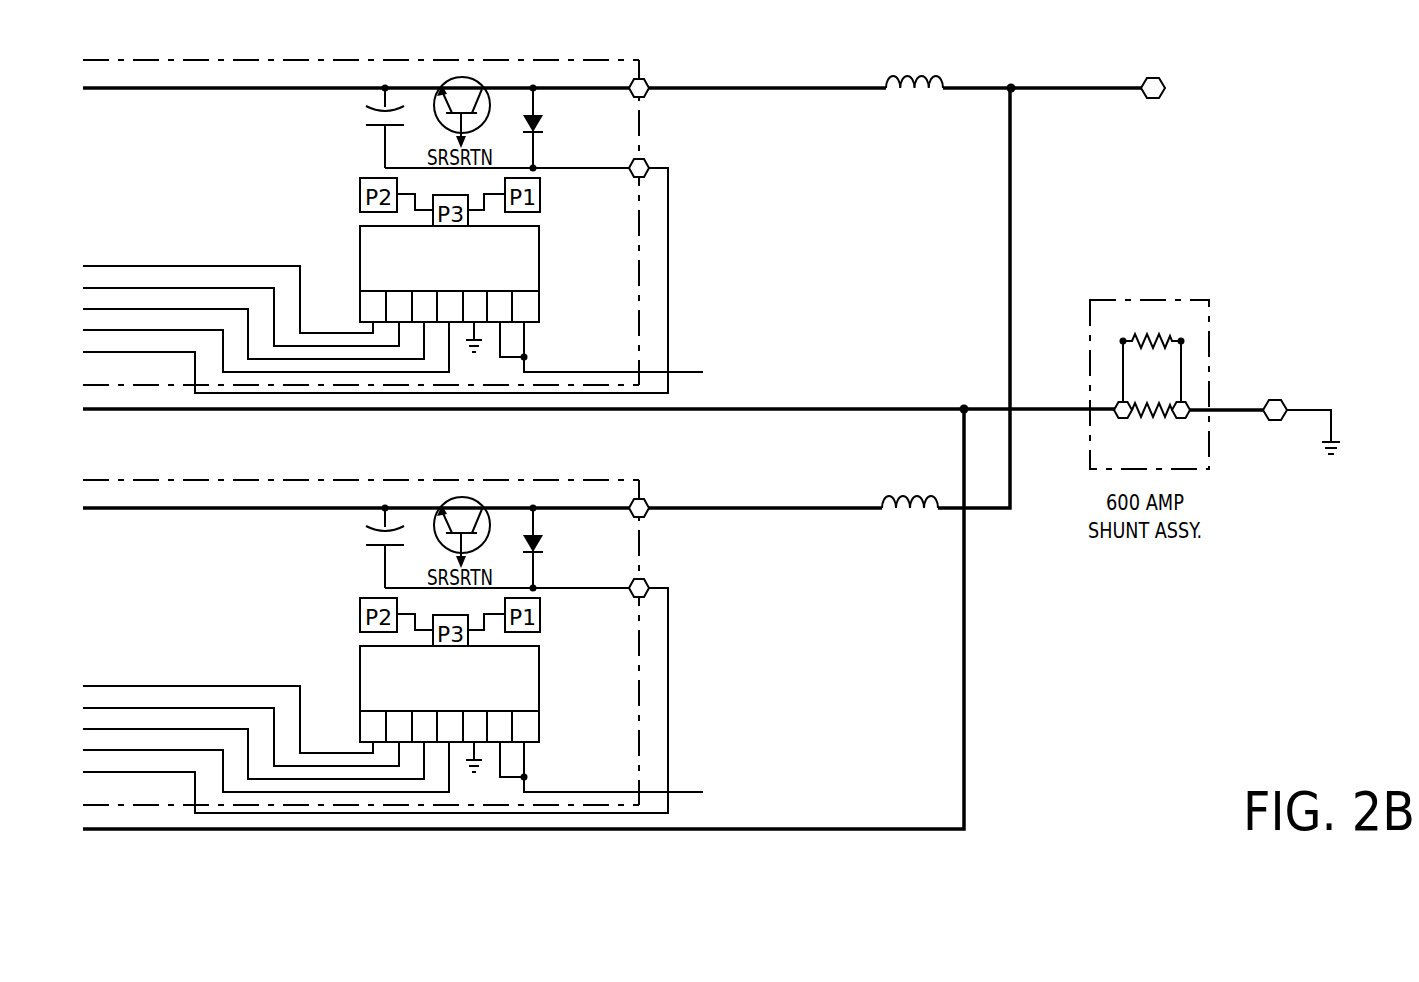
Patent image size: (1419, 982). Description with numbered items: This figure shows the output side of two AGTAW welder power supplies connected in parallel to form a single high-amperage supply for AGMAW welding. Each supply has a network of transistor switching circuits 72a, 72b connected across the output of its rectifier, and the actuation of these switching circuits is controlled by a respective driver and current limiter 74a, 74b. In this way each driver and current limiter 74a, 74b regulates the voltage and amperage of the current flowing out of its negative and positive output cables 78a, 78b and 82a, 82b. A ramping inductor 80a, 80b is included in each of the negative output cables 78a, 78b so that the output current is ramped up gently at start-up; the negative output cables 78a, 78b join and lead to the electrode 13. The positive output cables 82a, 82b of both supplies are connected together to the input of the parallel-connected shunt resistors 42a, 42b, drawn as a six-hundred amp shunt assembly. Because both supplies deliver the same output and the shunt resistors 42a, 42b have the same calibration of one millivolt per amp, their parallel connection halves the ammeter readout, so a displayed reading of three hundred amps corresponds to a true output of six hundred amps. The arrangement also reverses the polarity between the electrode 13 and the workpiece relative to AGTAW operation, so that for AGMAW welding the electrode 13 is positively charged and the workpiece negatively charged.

The electrode 13 is at (1162, 80).
The shunt resistor 42a is at (1158, 337).
The shunt resistor 42b is at (1140, 417).
The transistor switching circuit 72a is at (617, 63).
The transistor switching circuit 72b is at (650, 629).
The driver and current limiter 74a is at (539, 277).
The driver and current limiter 74b is at (480, 694).
The negative output cable 78a is at (1037, 88).
The negative output cable 78b is at (950, 80).
The ramping inductor 80a is at (908, 74).
The ramping inductor 80b is at (894, 479).
The positive output cable 82a is at (774, 412).
The positive output cable 82b is at (868, 828).